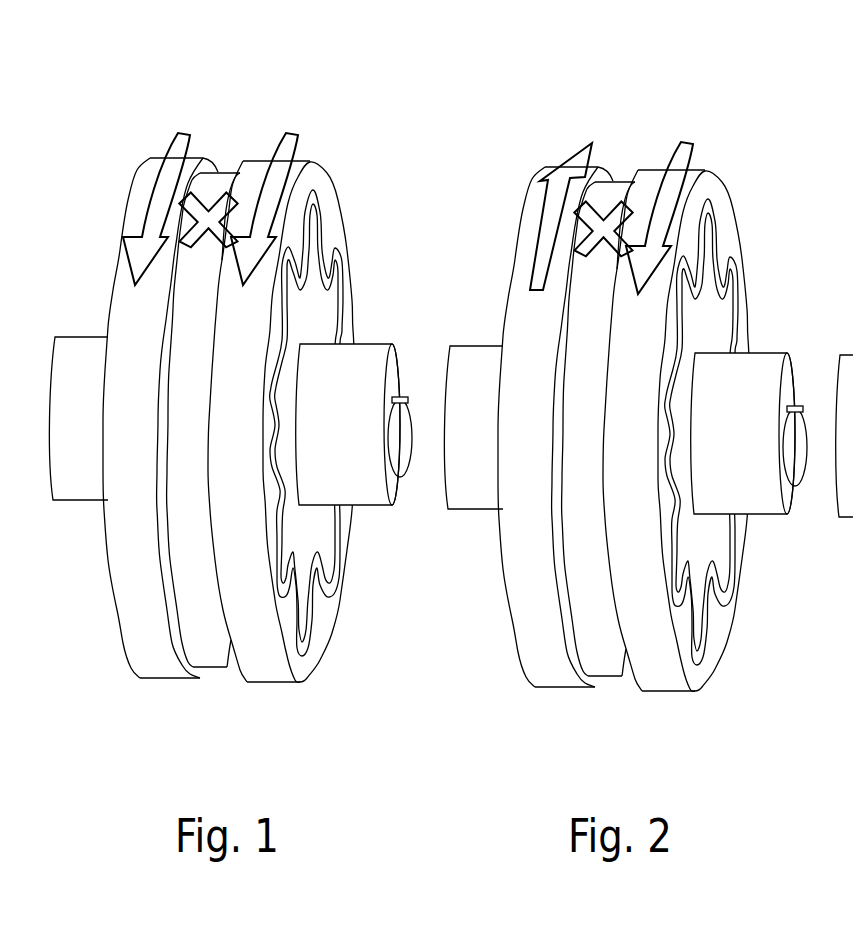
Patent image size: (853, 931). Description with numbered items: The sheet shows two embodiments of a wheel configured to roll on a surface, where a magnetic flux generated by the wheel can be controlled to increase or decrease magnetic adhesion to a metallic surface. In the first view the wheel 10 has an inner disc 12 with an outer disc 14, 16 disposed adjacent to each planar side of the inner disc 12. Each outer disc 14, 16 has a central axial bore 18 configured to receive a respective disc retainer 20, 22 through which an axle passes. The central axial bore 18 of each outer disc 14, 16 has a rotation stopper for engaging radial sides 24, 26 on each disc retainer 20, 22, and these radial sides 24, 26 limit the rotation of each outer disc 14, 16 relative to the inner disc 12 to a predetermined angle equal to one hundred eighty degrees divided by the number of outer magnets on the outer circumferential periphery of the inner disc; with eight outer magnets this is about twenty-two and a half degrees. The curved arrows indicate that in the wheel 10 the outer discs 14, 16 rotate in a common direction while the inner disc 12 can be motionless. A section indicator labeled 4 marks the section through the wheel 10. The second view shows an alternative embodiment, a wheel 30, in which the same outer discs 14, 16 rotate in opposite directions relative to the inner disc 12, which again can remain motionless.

In FIG. 1, the wheel 10 is at (93, 94).
In FIG. 2, the wheel 30 is at (648, 406).
In FIG. 1, the section line 4- 4 is at (147, 145).
In FIG. 1, the inner disc 12 is at (217, 670).
In FIG. 2, the inner disc 12 is at (606, 476).
In FIG. 1, the outer disc 14 is at (165, 680).
In FIG. 2, the outer disc 14 is at (555, 468).
In FIG. 1, the outer disc 16 is at (275, 682).
In FIG. 2, the outer disc 16 is at (677, 475).
In FIG. 1, the central axial bore 18 is at (304, 342).
In FIG. 2, the central axial bore 18 is at (740, 432).
In FIG. 1, the disc retainer 20 is at (83, 502).
In FIG. 2, the disc retainer 20 is at (473, 472).
In FIG. 1, the disc retainer 22 is at (362, 508).
In FIG. 2, the disc retainer 22 is at (743, 475).
In FIG. 1, the radial side 24 is at (386, 344).
In FIG. 2, the radial side 24 is at (797, 382).
In FIG. 1, the radial side 26 is at (405, 397).
In FIG. 2, the radial side 26 is at (820, 359).